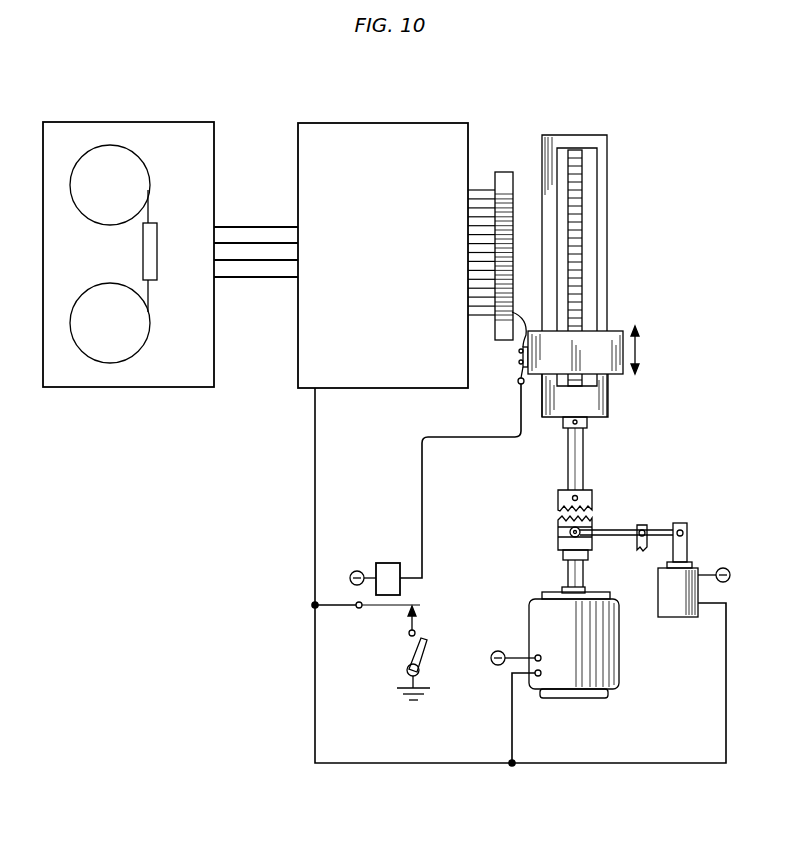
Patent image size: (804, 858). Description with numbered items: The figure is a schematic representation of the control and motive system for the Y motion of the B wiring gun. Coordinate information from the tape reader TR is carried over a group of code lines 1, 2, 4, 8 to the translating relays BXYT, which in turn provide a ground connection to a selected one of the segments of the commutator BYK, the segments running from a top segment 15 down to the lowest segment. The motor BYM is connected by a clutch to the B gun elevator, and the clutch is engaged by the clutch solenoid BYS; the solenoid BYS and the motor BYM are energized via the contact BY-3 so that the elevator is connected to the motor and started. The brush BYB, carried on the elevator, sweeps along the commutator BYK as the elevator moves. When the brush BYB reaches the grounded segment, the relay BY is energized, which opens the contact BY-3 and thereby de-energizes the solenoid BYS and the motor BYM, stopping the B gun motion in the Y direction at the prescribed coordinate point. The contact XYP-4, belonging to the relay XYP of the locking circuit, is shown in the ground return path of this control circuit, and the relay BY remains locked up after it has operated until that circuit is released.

The tape reader TR is at (141, 122).
The tape reader output line 1 is at (256, 220).
The binary code line 2 is at (256, 236).
The binary code line 4 is at (256, 253).
The binary code line 8 is at (256, 270).
The translating relays BXYT is at (383, 255).
The commutator BYK is at (507, 242).
The position 15 output line 15 is at (481, 182).
The brush BYB is at (518, 345).
The relay BY is at (435, 489).
The contact BY-3 is at (367, 616).
The contact of relay XYP XYP-4 is at (410, 648).
The motor BYM is at (529, 612).
The clutch solenoid BYS is at (694, 570).